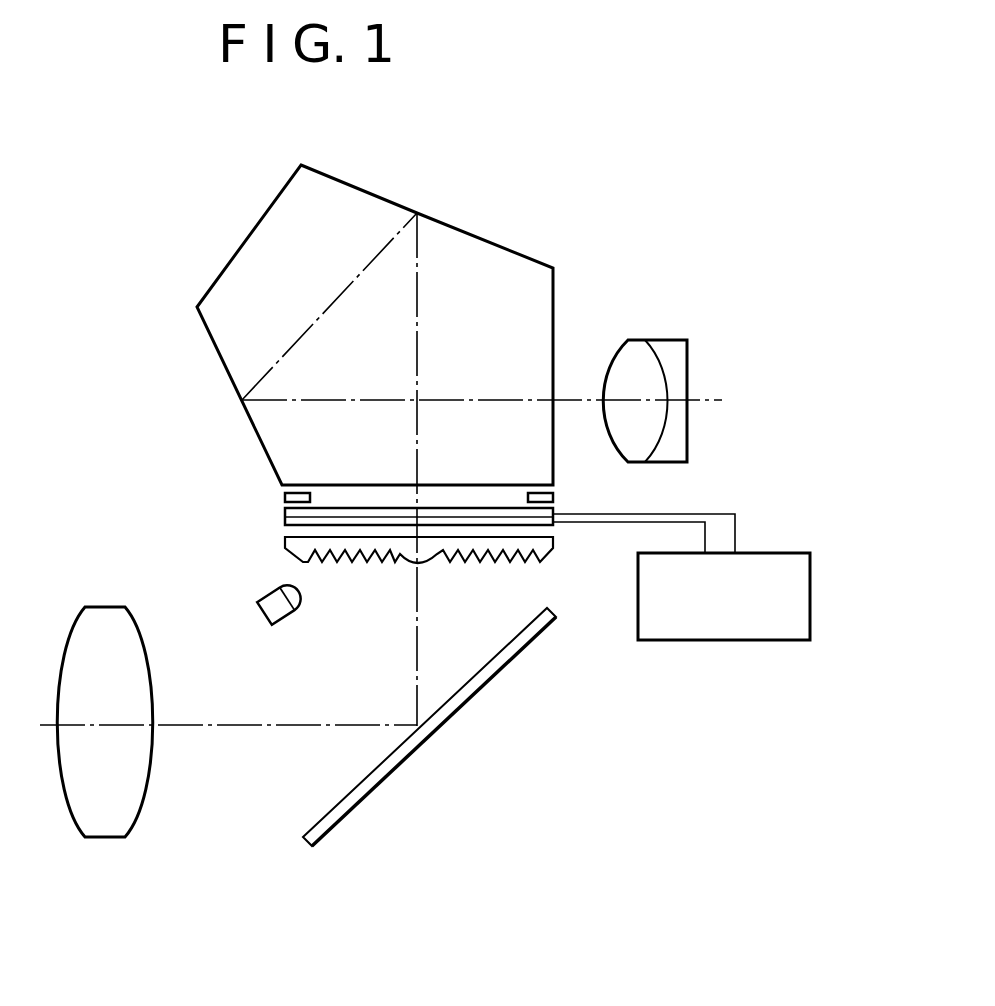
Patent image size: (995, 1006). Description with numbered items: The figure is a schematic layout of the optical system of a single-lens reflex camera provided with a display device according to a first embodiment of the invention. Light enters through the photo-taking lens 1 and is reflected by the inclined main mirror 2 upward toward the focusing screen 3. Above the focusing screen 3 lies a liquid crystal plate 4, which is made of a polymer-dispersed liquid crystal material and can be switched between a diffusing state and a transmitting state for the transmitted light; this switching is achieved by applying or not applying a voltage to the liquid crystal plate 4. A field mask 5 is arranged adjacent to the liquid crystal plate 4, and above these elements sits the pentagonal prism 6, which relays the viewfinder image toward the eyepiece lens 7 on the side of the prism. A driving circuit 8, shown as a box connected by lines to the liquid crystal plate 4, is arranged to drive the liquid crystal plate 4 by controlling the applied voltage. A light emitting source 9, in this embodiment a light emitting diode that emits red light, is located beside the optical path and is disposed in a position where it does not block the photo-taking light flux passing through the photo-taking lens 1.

The photo-taking lens 1 is at (105, 840).
The main mirror 2 is at (405, 759).
The focusing screen 3 is at (285, 540).
The liquid crystal plate 4 is at (285, 519).
The field mask 5 is at (283, 495).
The pentagonal prism 6 is at (487, 240).
The eyepiece lens 7 is at (676, 340).
The driving circuit 8 is at (813, 593).
The light emitting source 9 is at (260, 613).